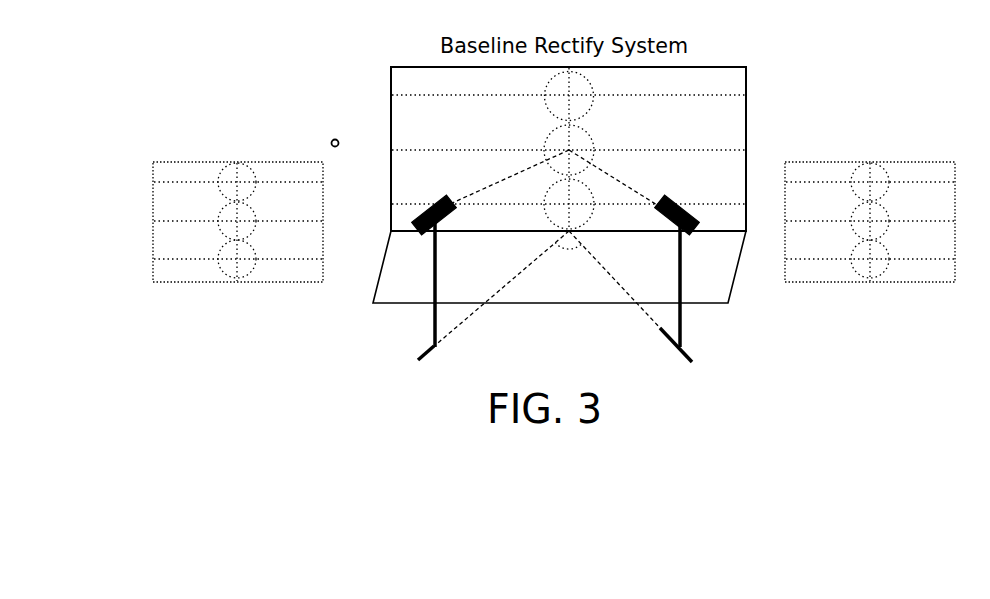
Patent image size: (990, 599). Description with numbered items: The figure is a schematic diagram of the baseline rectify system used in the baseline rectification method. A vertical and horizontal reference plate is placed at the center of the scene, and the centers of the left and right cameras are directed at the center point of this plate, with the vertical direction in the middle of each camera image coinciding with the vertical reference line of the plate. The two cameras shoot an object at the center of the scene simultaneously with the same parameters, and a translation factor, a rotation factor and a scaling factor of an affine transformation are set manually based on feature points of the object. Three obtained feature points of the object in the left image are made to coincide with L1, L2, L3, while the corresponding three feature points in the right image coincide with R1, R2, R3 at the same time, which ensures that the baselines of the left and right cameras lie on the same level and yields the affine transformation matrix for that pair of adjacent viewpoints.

The first left feature point L1 is at (237, 182).
The second left feature point L2 is at (237, 221).
The third left feature point L3 is at (237, 259).
The first right feature point R1 is at (870, 182).
The second right feature point R2 is at (870, 221).
The third right feature point R3 is at (870, 259).